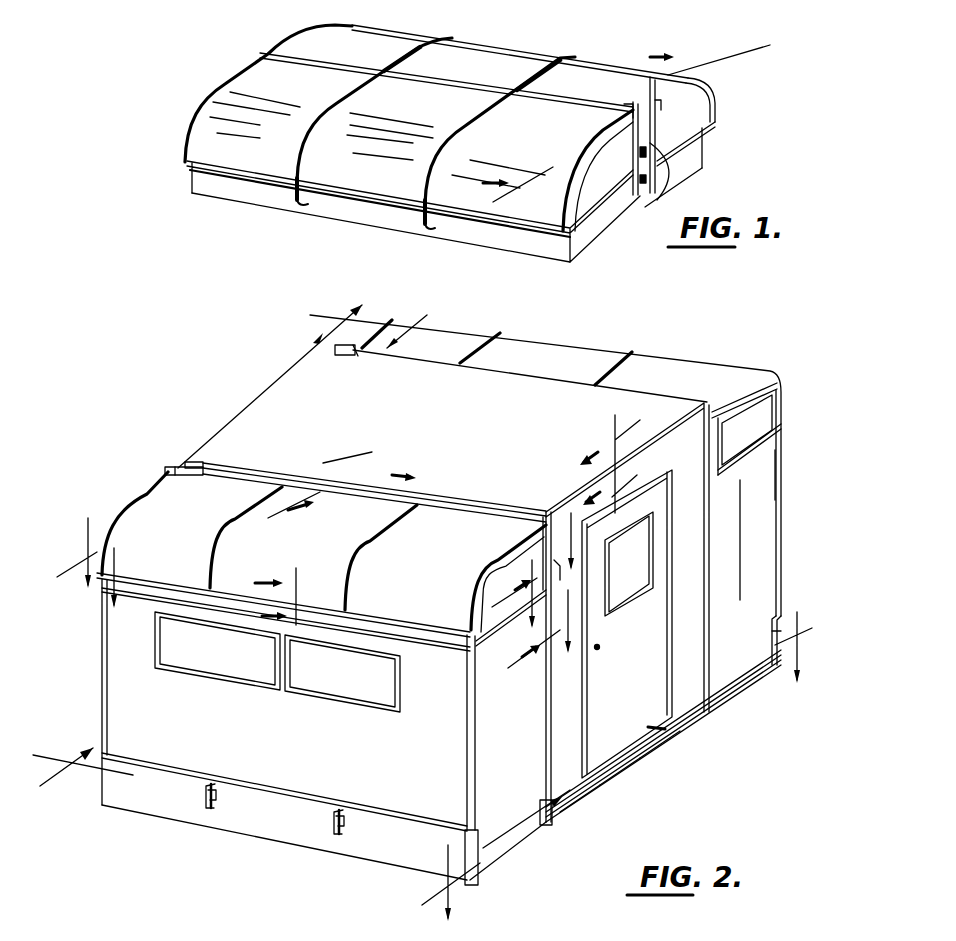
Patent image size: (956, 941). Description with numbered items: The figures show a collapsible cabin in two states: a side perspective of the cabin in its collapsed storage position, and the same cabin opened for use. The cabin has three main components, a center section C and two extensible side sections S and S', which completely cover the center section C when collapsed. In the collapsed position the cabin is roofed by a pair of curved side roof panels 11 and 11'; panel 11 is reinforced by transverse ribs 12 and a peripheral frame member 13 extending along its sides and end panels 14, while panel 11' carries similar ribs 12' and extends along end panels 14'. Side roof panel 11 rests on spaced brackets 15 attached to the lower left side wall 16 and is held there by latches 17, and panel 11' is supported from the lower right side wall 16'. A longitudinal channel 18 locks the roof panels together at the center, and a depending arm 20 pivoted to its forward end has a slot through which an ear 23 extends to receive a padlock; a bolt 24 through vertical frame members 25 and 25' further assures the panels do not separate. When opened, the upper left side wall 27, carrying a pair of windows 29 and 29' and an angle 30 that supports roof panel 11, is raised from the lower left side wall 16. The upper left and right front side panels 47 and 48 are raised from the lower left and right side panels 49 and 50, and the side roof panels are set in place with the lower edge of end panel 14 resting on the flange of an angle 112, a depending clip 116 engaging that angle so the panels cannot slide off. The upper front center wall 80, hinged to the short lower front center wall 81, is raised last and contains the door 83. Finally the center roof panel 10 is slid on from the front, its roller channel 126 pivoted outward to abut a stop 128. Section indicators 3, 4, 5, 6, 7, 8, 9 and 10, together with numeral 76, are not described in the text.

In FIG. 1, the extensible side section S is at (413, 211).
In FIG. 2, the extensible side section S is at (283, 718).
In FIG. 1, the extensible side section S' is at (710, 148).
In FIG. 2, the extensible side section S' is at (771, 540).
In FIG. 2, the center section C is at (665, 729).
In FIG. 1, the section line 3- 3 is at (622, 119).
In FIG. 2, the section line 4- 4 is at (300, 813).
In FIG. 2, the section line 5- 5 is at (615, 766).
In FIG. 2, the section line 6- 6 is at (95, 563).
In FIG. 2, the section line 7- 7 is at (546, 625).
In FIG. 2, the section line 8- 8 is at (595, 624).
In FIG. 2, the section line 9- 9 is at (526, 620).
In FIG. 2, the center roof panel 10 is at (285, 407).
In FIG. 1, the curved side roof panel 11 is at (356, 132).
In FIG. 2, the curved side roof panel 11 is at (363, 495).
In FIG. 1, the curved side roof panel 11' is at (520, 47).
In FIG. 2, the curved side roof panel 11' is at (545, 462).
In FIG. 1, the transverse rib 12 is at (409, 128).
In FIG. 2, the transverse rib 12 is at (378, 558).
In FIG. 1, the transverse rib 12' is at (426, 45).
In FIG. 2, the transverse rib 12' is at (512, 354).
In FIG. 1, the peripheral frame member 13 is at (342, 182).
In FIG. 2, the peripheral frame member 13 is at (358, 617).
In FIG. 1, the end panel 14 is at (578, 176).
In FIG. 2, the end panel 14 is at (492, 581).
In FIG. 1, the end panel 14' is at (697, 135).
In FIG. 2, the end panel 14' is at (763, 409).
In FIG. 1, the bracket 15 is at (306, 201).
In FIG. 2, the bracket 15 is at (349, 830).
In FIG. 1, the lower left side wall 16 is at (381, 235).
In FIG. 2, the lower left side wall 16 is at (284, 820).
In FIG. 1, the lower right side wall 16' is at (702, 141).
In FIG. 2, the lower right side wall 16' is at (800, 608).
In FIG. 1, the latch 17 is at (293, 190).
In FIG. 2, the latch 17 is at (204, 797).
In FIG. 1, the channel 18 is at (432, 76).
In FIG. 1, the depending arm 20 is at (640, 137).
In FIG. 1, the ear 23 is at (700, 168).
In FIG. 2, the ear 23 is at (778, 512).
In FIG. 1, the bolt 24 is at (640, 147).
In FIG. 1, the vertical frame member 25 is at (603, 118).
In FIG. 2, the vertical frame member 25 is at (568, 577).
In FIG. 1, the vertical frame member 25' is at (635, 95).
In FIG. 2, the upper left side wall 27 is at (460, 796).
In FIG. 2, the window 29 is at (217, 665).
In FIG. 2, the window 29' is at (342, 680).
In FIG. 2, the angle 30 is at (418, 641).
In FIG. 2, the upper left front side panel 47 is at (470, 748).
In FIG. 2, the upper right front side panel 48 is at (767, 495).
In FIG. 2, the lower left side panel 49 is at (554, 826).
In FIG. 2, the lower right side panel 50 is at (730, 683).
In FIG. 2, the door wall edge post 76 is at (692, 540).
In FIG. 2, the upper front center wall 80 is at (570, 777).
In FIG. 2, the lower front center wall 81 is at (617, 763).
In FIG. 2, the door 83 is at (630, 733).
In FIG. 2, the angle 112 is at (728, 462).
In FIG. 1, the depending clip 116 is at (660, 190).
In FIG. 2, the depending clip 116 is at (712, 468).
In FIG. 2, the channel 126 is at (170, 464).
In FIG. 2, the stop 128 is at (200, 464).